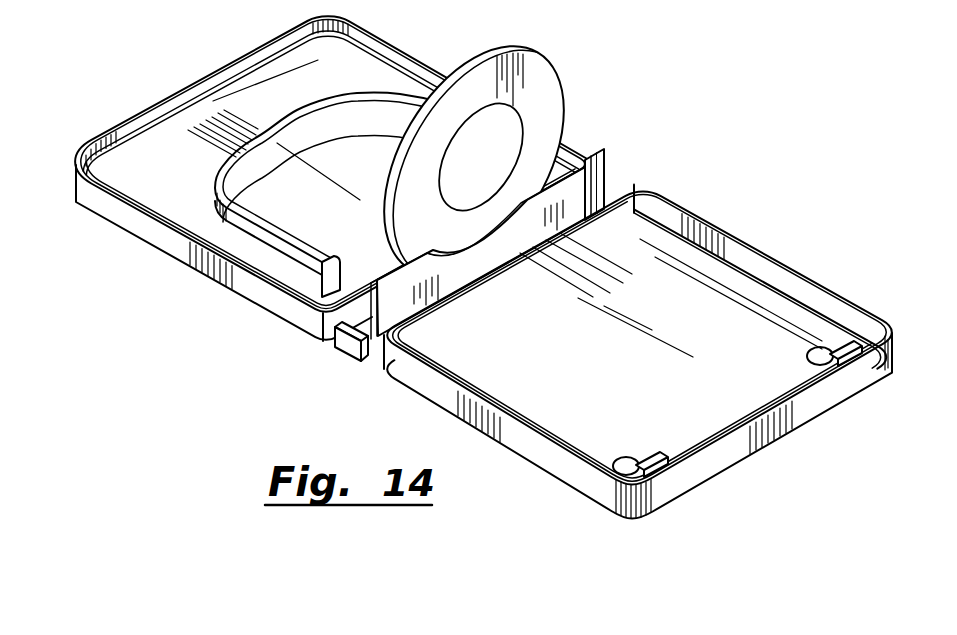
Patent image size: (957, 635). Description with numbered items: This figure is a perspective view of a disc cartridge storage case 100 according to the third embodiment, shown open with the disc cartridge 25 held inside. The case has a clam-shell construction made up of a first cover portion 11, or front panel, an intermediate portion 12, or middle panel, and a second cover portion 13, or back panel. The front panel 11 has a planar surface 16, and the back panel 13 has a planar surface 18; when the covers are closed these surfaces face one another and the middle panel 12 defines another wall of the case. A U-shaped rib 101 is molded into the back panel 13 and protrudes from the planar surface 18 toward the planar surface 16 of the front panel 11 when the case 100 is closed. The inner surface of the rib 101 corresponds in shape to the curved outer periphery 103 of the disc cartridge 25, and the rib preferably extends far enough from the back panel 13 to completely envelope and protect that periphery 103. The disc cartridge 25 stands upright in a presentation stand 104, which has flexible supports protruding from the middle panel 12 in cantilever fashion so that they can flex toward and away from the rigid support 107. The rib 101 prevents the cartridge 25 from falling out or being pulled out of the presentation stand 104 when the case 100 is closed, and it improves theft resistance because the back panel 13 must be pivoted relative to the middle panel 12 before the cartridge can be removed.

The disc cartridge storage case 100 is at (132, 94).
The first cover portion 11 is at (782, 307).
The intermediate portion 12 is at (343, 355).
The second cover portion 13 is at (145, 228).
The planar surface 16 is at (677, 260).
The planar surface 18 is at (302, 73).
The disc cartridge 25 is at (550, 108).
The U-shaped rib 101 is at (232, 182).
The curved outer periphery 103 is at (513, 47).
The presentation stand 104 is at (603, 189).
The rigid support 107 is at (440, 272).